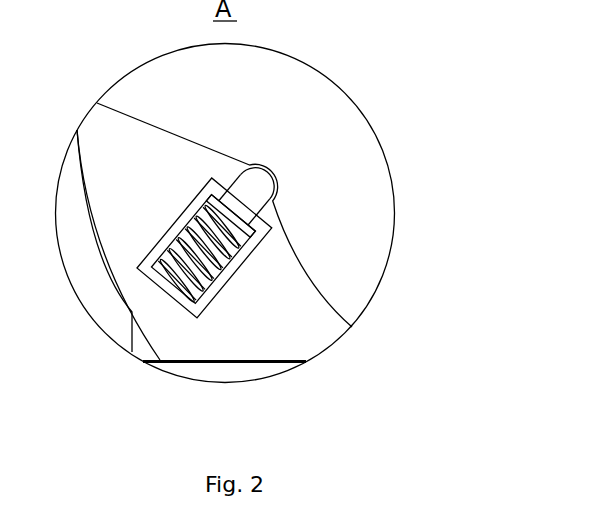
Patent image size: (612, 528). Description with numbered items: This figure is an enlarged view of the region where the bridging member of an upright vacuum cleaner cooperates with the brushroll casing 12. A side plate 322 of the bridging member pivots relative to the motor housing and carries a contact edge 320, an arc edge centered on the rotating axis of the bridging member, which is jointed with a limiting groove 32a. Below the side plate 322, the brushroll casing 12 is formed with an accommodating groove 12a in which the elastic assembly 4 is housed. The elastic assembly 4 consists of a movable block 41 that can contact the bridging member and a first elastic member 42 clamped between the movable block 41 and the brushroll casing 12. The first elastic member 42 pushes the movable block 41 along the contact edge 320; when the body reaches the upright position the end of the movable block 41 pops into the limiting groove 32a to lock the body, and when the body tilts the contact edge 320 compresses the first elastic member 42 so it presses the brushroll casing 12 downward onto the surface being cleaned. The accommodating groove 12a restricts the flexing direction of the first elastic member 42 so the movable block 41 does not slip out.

The brushroll casing 12 is at (133, 292).
The accommodating groove 12a is at (208, 282).
The elastic assembly 4 is at (304, 237).
The movable block 41 is at (252, 200).
The first elastic member 42 is at (230, 252).
The limiting groove 32a is at (275, 177).
The side plate 322 is at (300, 92).
The contact edge 320 is at (326, 300).